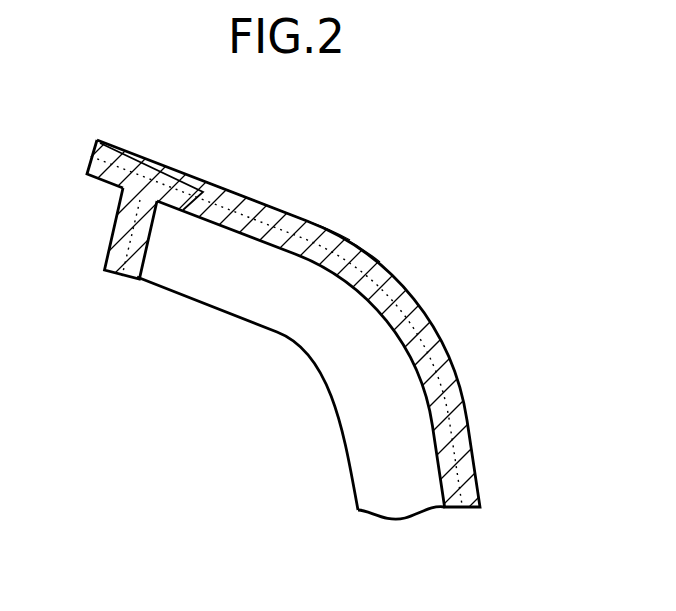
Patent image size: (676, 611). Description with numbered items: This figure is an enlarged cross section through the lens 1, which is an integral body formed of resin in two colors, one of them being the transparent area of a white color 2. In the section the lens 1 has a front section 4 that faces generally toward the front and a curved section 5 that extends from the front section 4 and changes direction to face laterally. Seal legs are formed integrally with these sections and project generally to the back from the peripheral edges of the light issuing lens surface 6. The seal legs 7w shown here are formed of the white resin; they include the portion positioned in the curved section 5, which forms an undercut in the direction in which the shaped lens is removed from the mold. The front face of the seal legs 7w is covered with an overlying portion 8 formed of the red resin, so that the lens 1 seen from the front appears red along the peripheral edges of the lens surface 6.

The lens 1 is at (440, 248).
The transparent area of a white color 2 is at (443, 340).
The front section 4 is at (480, 487).
The curved section 5 is at (273, 200).
The light issuing lens surface 6 is at (310, 222).
The seal legs formed of the white resin 7w is at (115, 228).
The overlying portion 8 is at (166, 168).